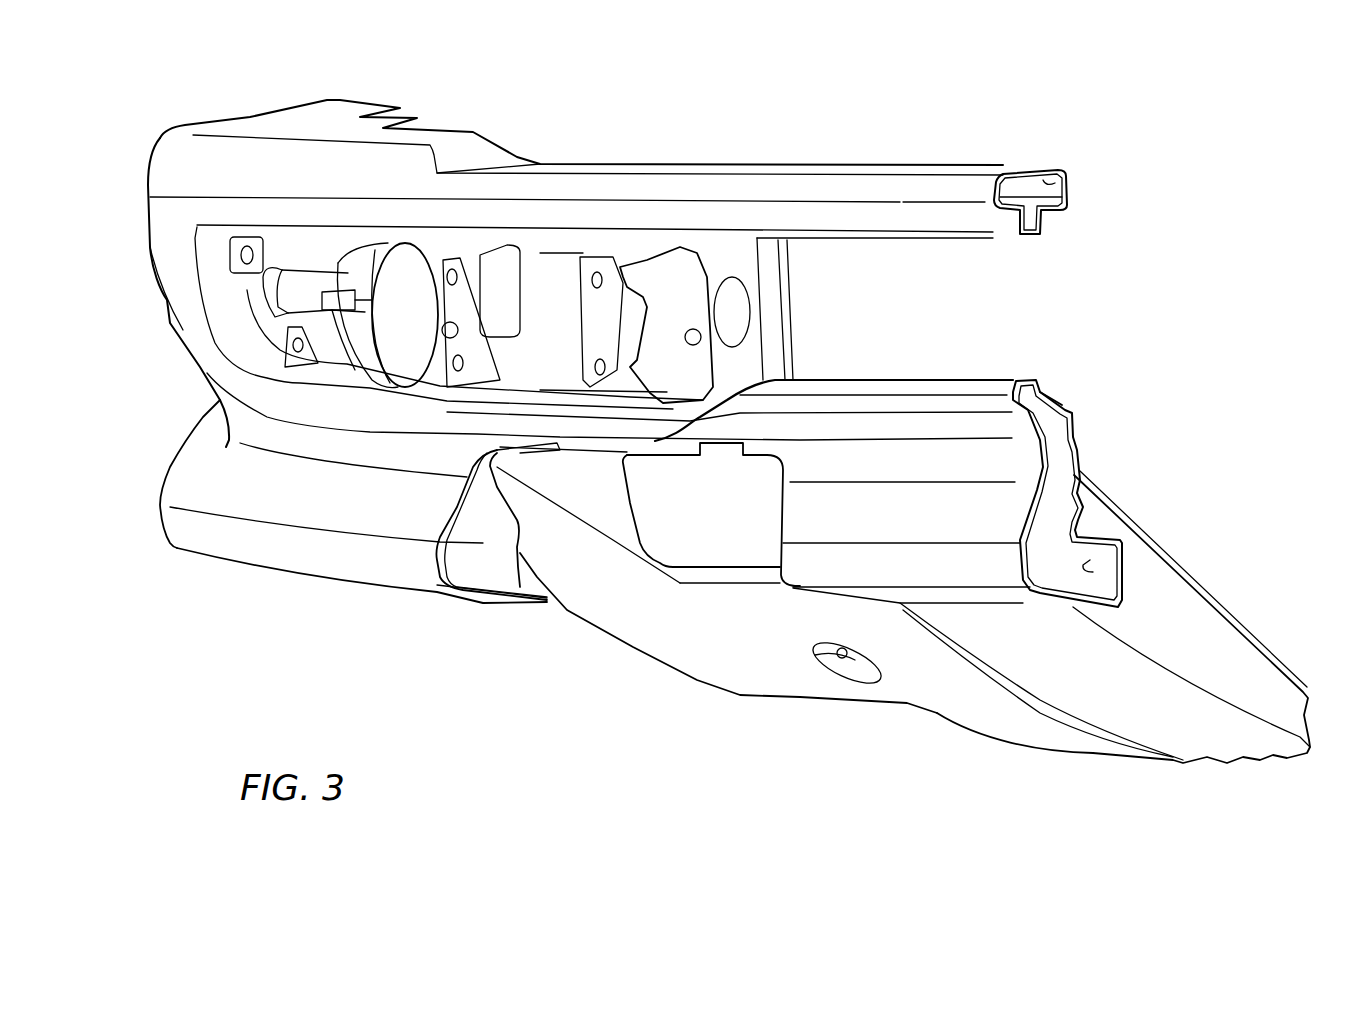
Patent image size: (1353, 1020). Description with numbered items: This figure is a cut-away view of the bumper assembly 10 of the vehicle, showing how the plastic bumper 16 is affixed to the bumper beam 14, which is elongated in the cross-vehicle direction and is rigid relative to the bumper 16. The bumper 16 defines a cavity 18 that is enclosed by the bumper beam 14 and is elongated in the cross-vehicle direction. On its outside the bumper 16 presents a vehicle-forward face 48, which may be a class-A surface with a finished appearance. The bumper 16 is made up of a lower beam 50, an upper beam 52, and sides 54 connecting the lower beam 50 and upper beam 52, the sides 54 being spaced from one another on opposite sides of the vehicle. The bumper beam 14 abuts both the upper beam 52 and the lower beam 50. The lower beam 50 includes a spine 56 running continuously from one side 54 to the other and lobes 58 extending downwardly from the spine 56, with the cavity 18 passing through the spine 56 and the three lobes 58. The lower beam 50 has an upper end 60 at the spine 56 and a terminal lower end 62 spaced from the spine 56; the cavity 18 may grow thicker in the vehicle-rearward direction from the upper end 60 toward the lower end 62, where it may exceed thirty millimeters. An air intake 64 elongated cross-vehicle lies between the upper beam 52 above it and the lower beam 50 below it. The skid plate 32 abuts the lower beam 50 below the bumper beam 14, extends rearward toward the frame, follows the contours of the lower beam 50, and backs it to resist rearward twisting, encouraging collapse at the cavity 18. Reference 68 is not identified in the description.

The bumper assembly 10 is at (1030, 118).
The bumper beam 14 is at (1050, 395).
The bumper 16 is at (248, 117).
The cavity 18 is at (1055, 183).
The skid plate 32 is at (720, 672).
The vehicle-forward face 48 is at (223, 542).
The lower beam 50 is at (1093, 517).
The upper beam 52 is at (1070, 155).
The side 54 is at (190, 322).
The spine 56 is at (757, 440).
The lobe 58 is at (337, 560).
The upper end 60 is at (930, 383).
The lower end 62 is at (938, 605).
The air intake 64 is at (868, 292).
The cylindrical member 68 is at (413, 307).